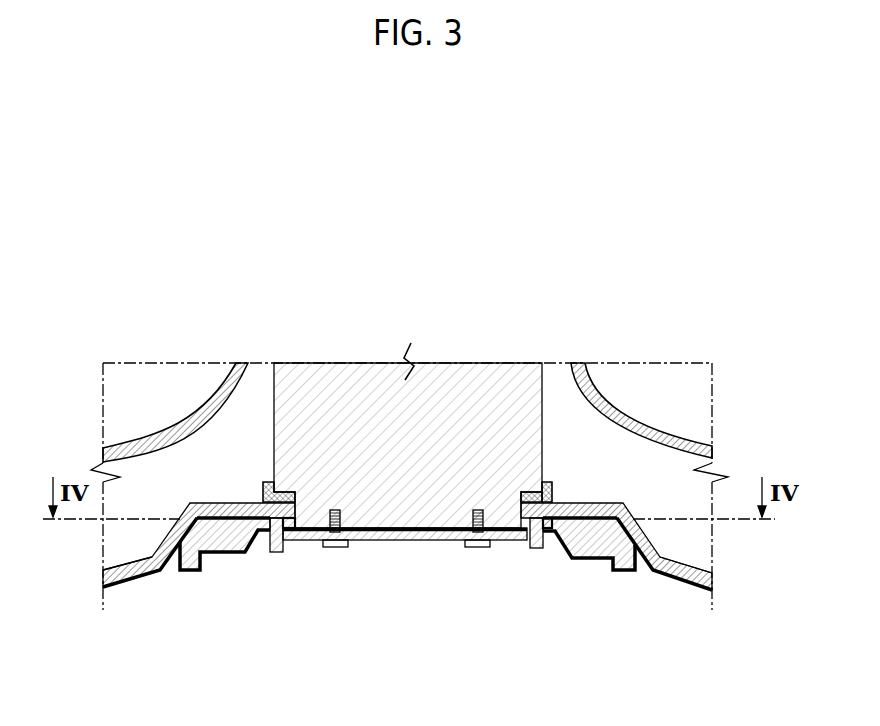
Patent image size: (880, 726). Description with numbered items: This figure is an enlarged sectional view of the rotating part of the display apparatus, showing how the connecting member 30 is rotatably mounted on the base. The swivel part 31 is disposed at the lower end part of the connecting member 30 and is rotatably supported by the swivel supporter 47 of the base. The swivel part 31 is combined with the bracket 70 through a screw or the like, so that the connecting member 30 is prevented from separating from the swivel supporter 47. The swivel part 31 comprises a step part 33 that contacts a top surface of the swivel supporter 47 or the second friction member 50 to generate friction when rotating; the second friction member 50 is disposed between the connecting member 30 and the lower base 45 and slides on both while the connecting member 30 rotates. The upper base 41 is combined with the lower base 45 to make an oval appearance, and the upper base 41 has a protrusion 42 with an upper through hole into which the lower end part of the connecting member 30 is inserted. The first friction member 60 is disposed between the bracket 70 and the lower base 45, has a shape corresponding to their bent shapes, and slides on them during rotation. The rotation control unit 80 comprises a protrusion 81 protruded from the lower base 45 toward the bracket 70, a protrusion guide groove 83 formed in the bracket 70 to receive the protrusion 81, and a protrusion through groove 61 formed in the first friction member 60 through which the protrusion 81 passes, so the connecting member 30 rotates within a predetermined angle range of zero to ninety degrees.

The connecting member 30 is at (658, 455).
The swivel part 31 is at (537, 480).
The step part 33 is at (541, 479).
The upper base 41 is at (180, 427).
The protrusion 42 is at (582, 380).
The lower base 45 is at (677, 573).
The swivel supporter 47 is at (527, 539).
The second friction member 50 is at (553, 541).
The first friction member 60 is at (625, 565).
The protrusion through groove 61 is at (268, 543).
The bracket 70 is at (400, 537).
The rotation control unit 80 is at (283, 587).
The protrusion 81 is at (278, 552).
The protrusion guide groove 83 is at (284, 546).